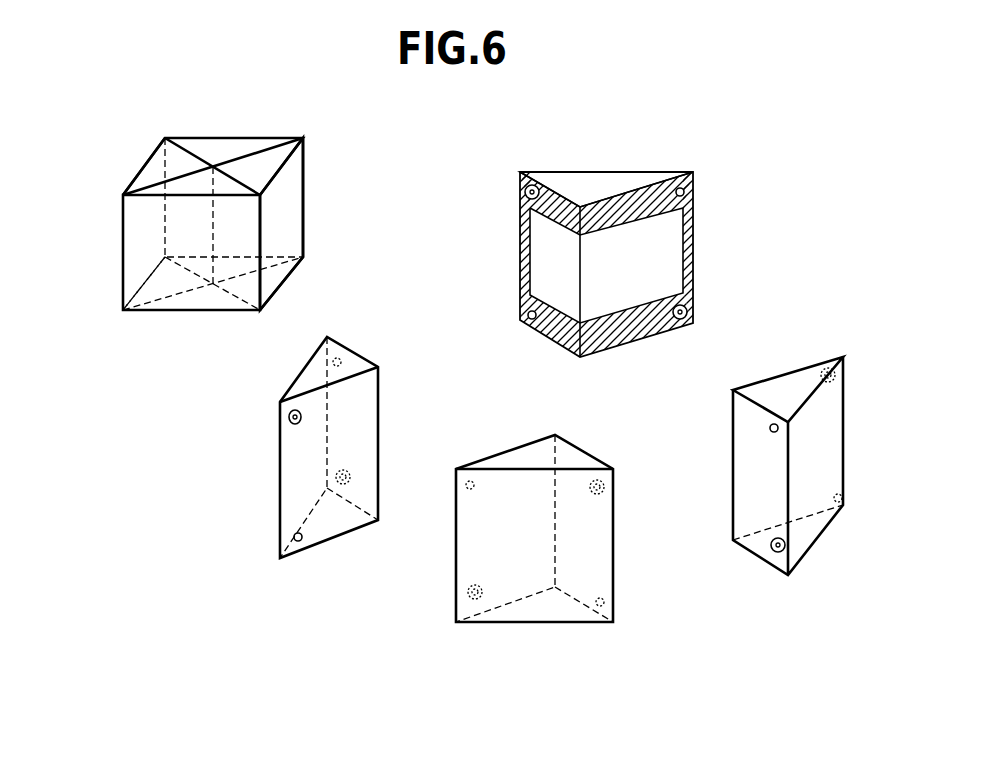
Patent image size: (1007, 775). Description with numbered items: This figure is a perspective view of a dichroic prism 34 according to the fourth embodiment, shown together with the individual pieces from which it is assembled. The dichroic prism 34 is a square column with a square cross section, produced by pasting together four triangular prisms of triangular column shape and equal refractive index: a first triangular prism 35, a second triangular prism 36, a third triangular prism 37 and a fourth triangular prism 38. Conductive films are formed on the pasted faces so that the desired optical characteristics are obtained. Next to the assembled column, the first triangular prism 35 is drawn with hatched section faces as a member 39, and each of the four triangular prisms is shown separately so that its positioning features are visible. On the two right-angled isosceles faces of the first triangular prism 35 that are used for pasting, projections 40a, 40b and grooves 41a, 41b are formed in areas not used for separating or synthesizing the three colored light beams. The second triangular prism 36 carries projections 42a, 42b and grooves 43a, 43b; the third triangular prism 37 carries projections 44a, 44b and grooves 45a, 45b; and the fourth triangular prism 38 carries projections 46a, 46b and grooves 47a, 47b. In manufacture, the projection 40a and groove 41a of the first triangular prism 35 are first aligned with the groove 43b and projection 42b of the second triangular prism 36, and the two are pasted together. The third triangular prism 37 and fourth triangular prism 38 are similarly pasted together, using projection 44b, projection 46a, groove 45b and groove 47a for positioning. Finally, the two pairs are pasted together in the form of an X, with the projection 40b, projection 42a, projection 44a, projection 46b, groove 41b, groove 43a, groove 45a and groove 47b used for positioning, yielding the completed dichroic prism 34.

The dichroic prism 34 is at (120, 223).
The first triangular prism 35 is at (210, 150).
The second triangular prism 36 is at (157, 168).
The third triangular prism 37 is at (142, 260).
The fourth triangular prism 38 is at (290, 220).
The frame member 39 is at (613, 337).
The projection 40a is at (520, 310).
The projection 40b is at (693, 188).
The groove 41a is at (520, 188).
The groove 41b is at (697, 318).
The projection 42a is at (295, 533).
The projection 42b is at (330, 360).
The groove 43a is at (290, 427).
The groove 43b is at (350, 477).
The projection 44a is at (467, 482).
The projection 44b is at (605, 602).
The groove 45a is at (468, 592).
The groove 45b is at (603, 487).
The projection 46a is at (770, 428).
The projection 46b is at (840, 497).
The groove 47a is at (777, 553).
The groove 47b is at (823, 368).